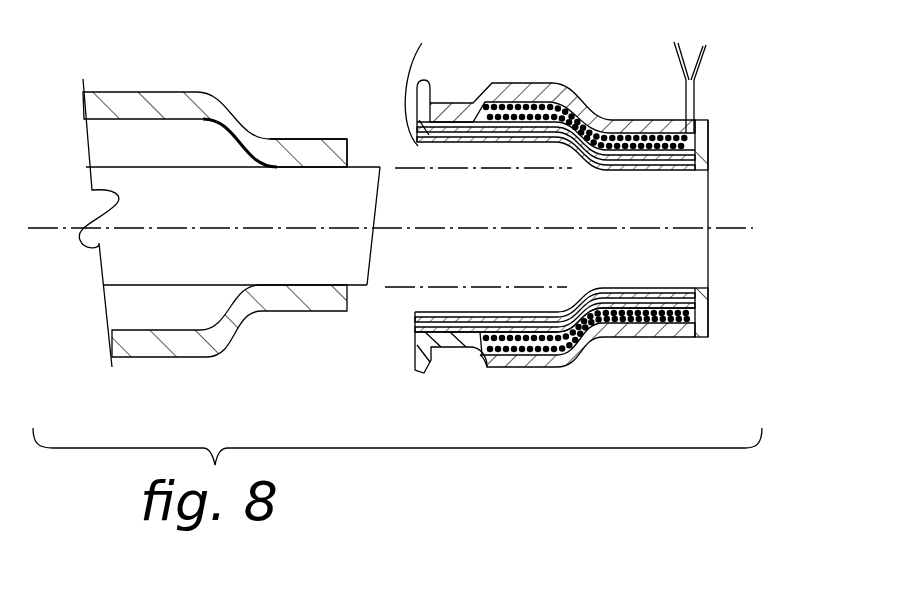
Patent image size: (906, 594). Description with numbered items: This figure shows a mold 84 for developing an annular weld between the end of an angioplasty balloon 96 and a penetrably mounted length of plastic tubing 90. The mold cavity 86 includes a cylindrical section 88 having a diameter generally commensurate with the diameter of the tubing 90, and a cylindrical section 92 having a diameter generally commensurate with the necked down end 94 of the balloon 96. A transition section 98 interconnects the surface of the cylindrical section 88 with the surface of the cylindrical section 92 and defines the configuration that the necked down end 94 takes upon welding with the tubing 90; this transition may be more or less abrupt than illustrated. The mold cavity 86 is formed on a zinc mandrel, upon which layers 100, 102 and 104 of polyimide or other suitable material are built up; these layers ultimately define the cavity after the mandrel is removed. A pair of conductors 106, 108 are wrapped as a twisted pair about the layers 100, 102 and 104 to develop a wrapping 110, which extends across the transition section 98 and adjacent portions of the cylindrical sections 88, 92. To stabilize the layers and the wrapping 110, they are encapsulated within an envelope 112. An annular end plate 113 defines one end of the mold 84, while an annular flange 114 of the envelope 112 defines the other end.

The mold 84 is at (577, 421).
The mold cavity 86 is at (673, 220).
The cylindrical section 88 is at (657, 288).
The tubing 90 is at (365, 166).
The cylindrical section 92 is at (422, 43).
The necked down end 94 is at (308, 135).
The balloon 96 is at (128, 88).
The transition section 98 is at (572, 153).
The layer 100 is at (417, 313).
The layer 102 is at (417, 320).
The layer 104 is at (417, 328).
The conductor 106 is at (673, 43).
The conductor 108 is at (707, 56).
The wrapping 110 is at (625, 322).
The envelope 112 is at (535, 367).
The annular end plate 113 is at (710, 335).
The annular flange 114 is at (426, 372).